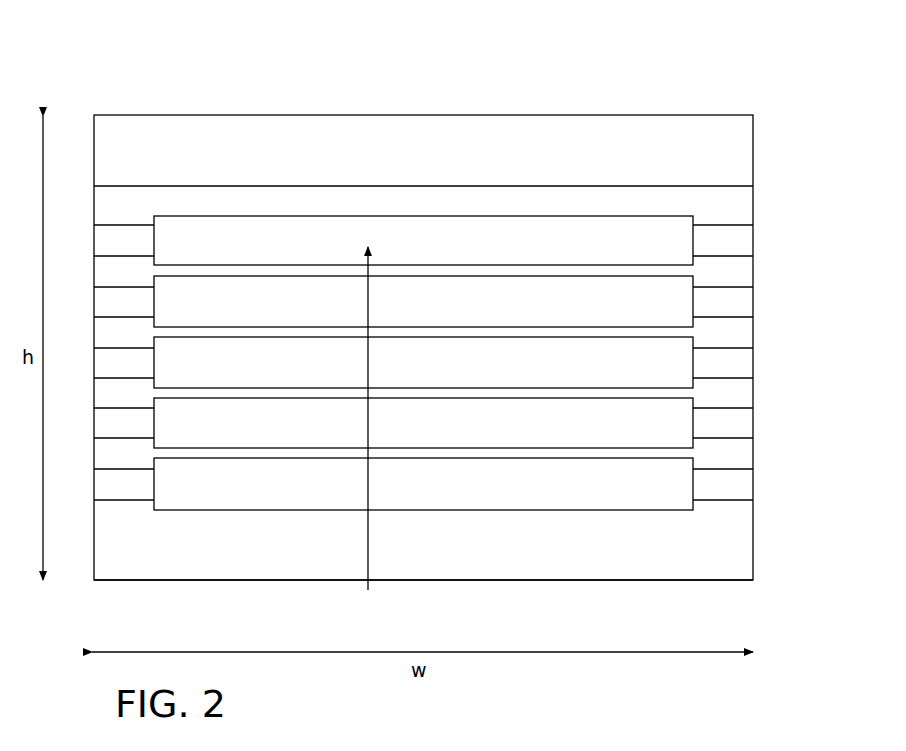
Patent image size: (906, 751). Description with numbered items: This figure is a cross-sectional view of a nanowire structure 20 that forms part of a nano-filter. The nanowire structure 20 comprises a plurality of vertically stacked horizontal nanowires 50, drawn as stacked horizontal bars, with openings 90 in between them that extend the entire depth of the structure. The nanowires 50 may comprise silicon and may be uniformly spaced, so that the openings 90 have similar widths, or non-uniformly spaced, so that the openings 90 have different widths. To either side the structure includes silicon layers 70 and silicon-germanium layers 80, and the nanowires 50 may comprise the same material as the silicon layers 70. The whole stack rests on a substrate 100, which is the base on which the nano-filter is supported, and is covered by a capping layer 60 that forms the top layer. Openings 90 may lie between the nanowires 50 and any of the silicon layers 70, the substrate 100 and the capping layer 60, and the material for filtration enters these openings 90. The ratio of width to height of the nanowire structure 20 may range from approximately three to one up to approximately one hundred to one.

The nanowire structure 20 is at (592, 93).
The capping layer 60 is at (393, 163).
The substrate 100 is at (514, 559).
The vertically stacked horizontal nanowires 50 is at (222, 388).
The silicon layers 70 is at (755, 335).
The silicon-germanium layers 80 is at (754, 430).
The openings 90 is at (427, 370).